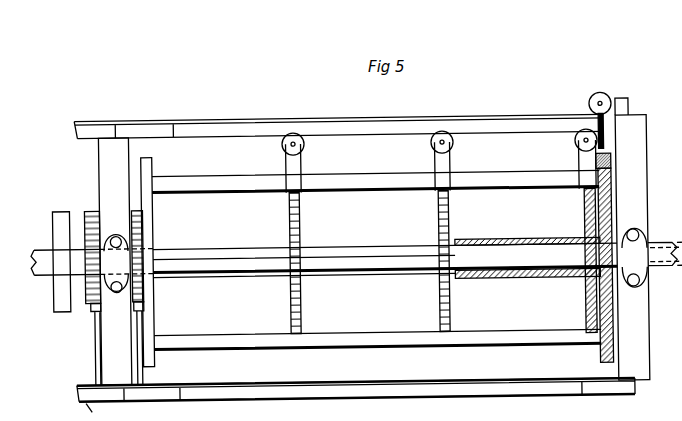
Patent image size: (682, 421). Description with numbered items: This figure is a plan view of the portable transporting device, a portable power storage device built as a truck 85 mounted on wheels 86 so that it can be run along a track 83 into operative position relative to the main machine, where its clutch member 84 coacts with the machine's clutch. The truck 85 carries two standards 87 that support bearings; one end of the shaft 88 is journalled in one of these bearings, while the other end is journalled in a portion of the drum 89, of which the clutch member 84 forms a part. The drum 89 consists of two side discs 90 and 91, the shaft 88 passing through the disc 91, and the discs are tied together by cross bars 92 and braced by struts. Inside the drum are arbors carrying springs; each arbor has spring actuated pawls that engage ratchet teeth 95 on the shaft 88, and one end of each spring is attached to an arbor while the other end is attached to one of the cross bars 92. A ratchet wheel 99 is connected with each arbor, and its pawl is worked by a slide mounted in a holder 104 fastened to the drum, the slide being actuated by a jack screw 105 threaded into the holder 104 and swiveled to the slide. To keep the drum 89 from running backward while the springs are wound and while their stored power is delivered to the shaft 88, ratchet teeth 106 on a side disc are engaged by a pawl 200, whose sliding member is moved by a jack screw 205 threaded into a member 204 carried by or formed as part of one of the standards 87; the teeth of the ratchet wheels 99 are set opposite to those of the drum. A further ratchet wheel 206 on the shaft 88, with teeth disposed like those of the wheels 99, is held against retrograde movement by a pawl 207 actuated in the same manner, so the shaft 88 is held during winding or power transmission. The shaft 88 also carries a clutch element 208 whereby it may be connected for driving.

The track 83 is at (160, 131).
The clutch member 84 is at (656, 241).
The truck 85 is at (112, 362).
The wheels 86 is at (160, 397).
The standards 87 is at (640, 346).
The shaft 88 is at (387, 247).
The drum 89 is at (424, 320).
The side disc 90 is at (153, 214).
The side disc 91 is at (597, 354).
The cross bars 92 is at (215, 258).
The ratchet teeth 95 is at (502, 279).
The ratchet wheel 99 is at (302, 229).
The holder 104 is at (303, 166).
The jack screw 105 is at (306, 149).
The ratchet teeth 106 is at (612, 168).
The pawl 200 is at (605, 141).
The member 204 is at (612, 113).
The jack screw 205 is at (604, 105).
The ratchet wheel 206 is at (92, 207).
The pawl 207 is at (92, 334).
The clutch element 208 is at (37, 246).